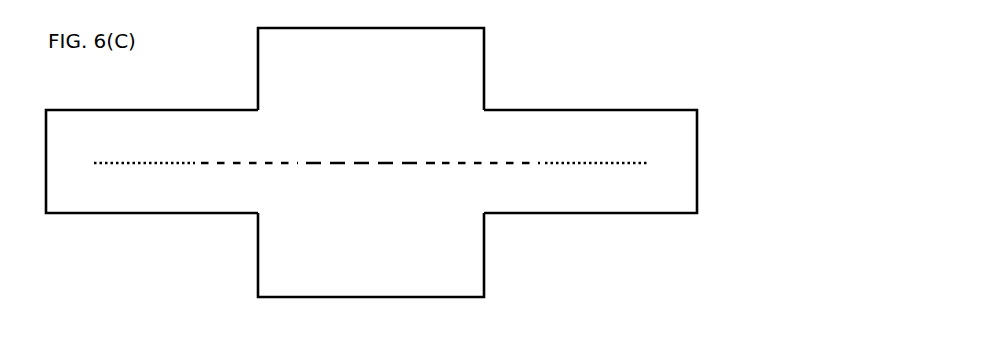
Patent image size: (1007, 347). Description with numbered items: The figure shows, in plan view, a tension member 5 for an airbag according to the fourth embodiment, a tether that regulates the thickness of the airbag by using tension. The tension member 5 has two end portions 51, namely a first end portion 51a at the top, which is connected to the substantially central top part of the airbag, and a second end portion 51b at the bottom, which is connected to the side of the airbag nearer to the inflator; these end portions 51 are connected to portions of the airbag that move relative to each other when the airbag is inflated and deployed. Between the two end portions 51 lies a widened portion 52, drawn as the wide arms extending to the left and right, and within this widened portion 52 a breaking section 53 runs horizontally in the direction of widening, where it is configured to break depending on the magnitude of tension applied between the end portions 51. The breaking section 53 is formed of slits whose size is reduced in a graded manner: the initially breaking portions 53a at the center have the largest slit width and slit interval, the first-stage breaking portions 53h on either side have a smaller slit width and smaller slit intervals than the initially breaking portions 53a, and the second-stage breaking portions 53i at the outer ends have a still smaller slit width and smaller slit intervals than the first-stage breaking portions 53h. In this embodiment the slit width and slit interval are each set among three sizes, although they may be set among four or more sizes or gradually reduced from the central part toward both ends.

The tension member for airbag 5 is at (226, 39).
The end portions 51 is at (412, 162).
The first end portion 51a is at (486, 54).
The second end portion 51b is at (486, 276).
The widened portion 52 is at (128, 109).
The breaking section 53 is at (243, 170).
The initially breaking portions 53a is at (435, 153).
The first-stage breaking portions 53h is at (298, 153).
The second-stage breaking portions 53i is at (195, 153).